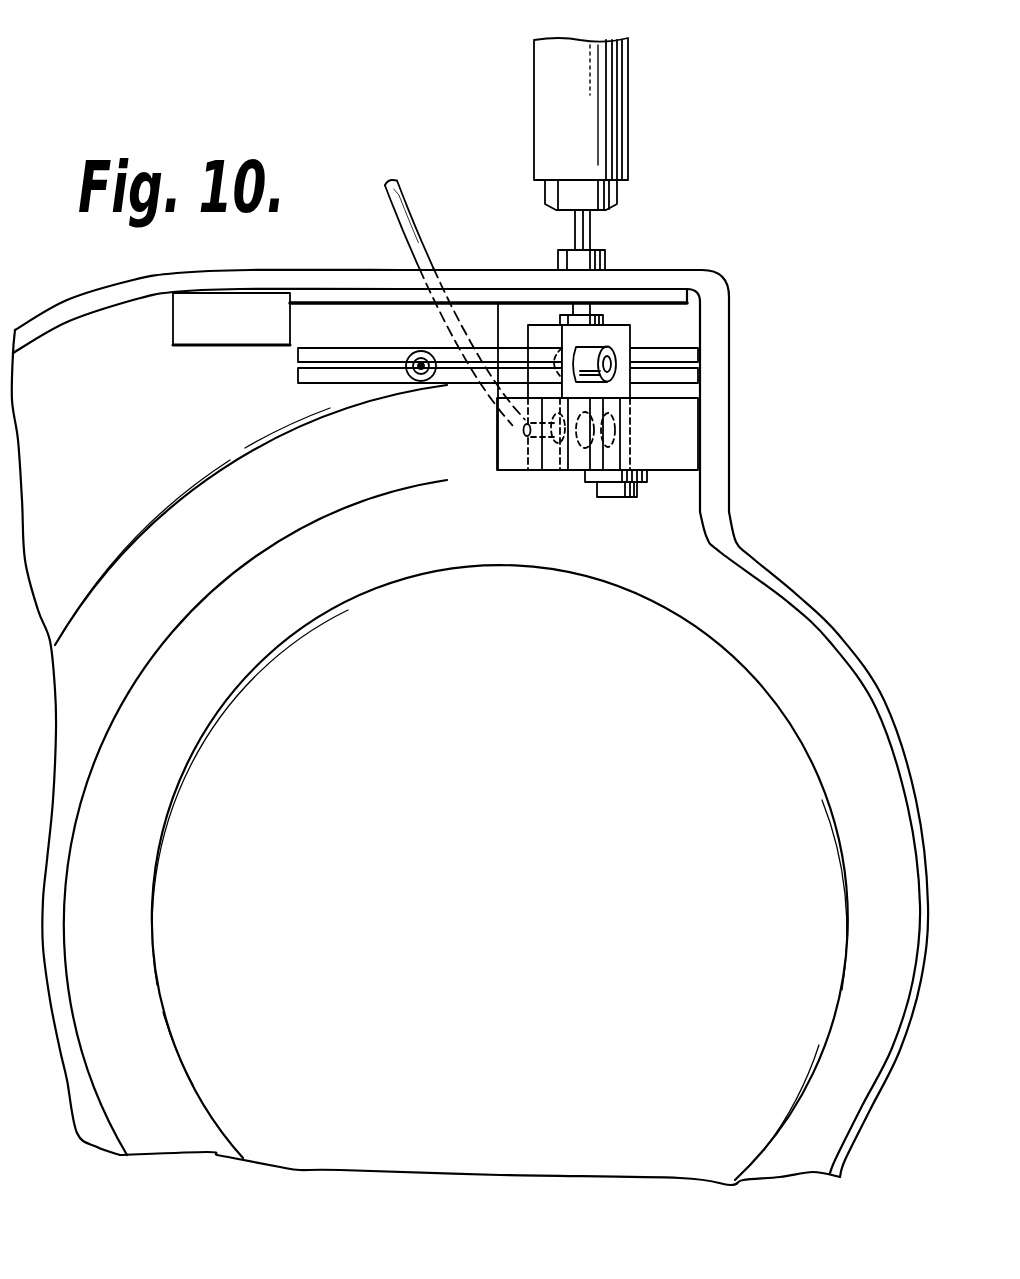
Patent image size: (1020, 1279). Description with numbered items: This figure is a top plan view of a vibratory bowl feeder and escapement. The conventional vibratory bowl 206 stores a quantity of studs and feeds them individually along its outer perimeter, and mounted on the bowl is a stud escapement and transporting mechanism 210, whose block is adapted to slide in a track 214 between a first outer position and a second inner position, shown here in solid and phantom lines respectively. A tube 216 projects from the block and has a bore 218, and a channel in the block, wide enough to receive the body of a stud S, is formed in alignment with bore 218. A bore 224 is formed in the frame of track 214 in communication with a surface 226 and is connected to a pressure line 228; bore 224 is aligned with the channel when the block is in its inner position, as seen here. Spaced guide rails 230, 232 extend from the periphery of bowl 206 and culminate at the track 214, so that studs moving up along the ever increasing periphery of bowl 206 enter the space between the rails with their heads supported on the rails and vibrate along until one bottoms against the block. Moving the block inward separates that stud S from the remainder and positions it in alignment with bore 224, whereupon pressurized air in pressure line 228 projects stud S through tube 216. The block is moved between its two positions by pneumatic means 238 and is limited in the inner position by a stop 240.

The vibratory bowl 206 is at (803, 645).
The stud escapement and transporting mechanism 210 is at (623, 325).
The track 214 is at (625, 414).
The tube 216 is at (597, 348).
The bore 218 is at (612, 363).
The bore 224 is at (524, 431).
The surface 226 is at (575, 458).
The pressure line 228 is at (407, 218).
The guide rail 230 is at (387, 327).
The guide rail 232 is at (330, 381).
The pneumatic means 238 is at (633, 131).
The stop 240 is at (630, 473).
The stud S is at (428, 350).